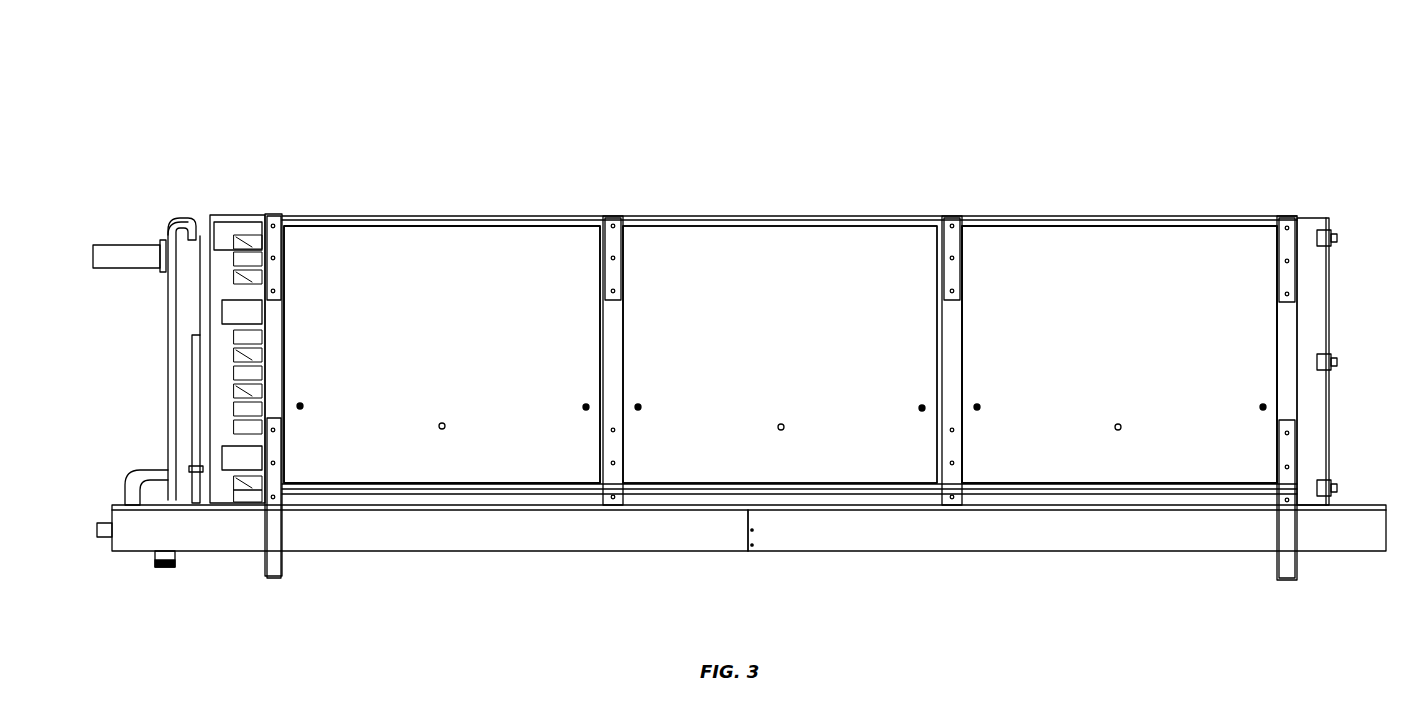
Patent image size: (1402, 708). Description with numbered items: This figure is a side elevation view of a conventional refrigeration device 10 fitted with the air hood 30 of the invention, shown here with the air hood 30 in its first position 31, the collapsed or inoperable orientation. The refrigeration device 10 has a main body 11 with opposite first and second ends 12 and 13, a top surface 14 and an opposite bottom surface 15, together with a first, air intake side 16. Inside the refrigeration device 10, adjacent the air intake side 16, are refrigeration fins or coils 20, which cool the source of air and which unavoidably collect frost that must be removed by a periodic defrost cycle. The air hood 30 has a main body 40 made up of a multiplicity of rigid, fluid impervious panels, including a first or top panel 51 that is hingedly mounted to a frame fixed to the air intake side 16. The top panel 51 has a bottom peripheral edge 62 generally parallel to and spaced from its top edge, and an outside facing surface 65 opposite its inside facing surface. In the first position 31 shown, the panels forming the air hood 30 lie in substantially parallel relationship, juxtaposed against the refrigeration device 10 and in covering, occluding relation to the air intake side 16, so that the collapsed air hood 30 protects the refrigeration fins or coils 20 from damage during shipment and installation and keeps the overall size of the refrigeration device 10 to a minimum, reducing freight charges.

The refrigeration device 10 is at (832, 135).
The main body 11 is at (1312, 268).
The first end 12 is at (283, 213).
The second end 13 is at (1290, 215).
The top surface 14 is at (1047, 216).
The bottom surface 15 is at (1030, 552).
The air intake side 16 is at (838, 508).
The refrigeration fins or coils 20 is at (232, 266).
The air hood 30 is at (682, 248).
The first position 31 is at (795, 367).
The main body 40 is at (490, 455).
The first or top panel 51 is at (504, 367).
The bottom peripheral edge 62 is at (556, 496).
The outside facing surface 65 is at (413, 337).